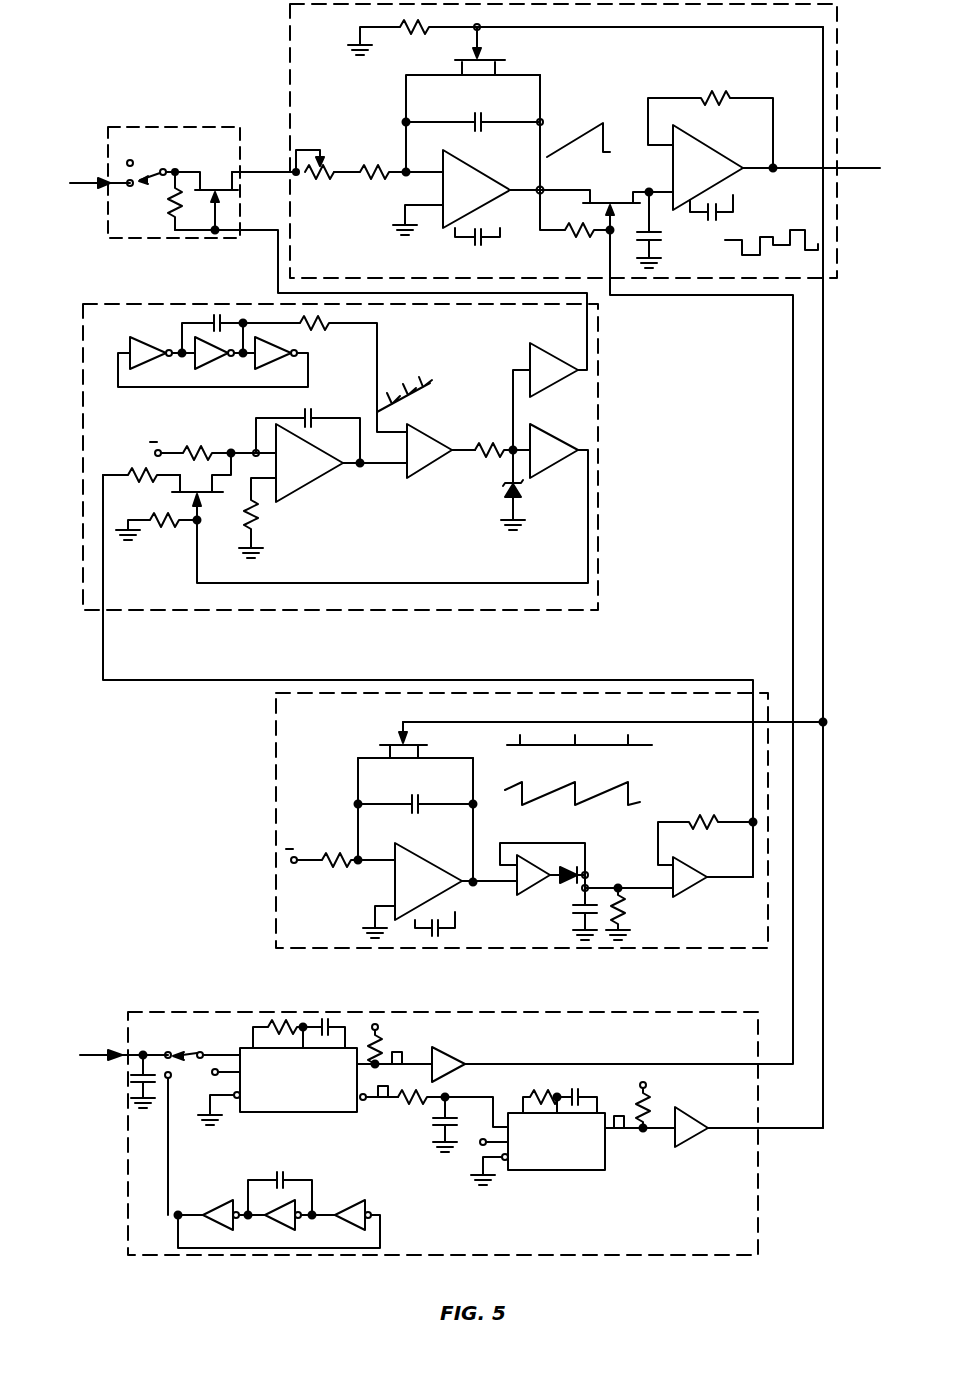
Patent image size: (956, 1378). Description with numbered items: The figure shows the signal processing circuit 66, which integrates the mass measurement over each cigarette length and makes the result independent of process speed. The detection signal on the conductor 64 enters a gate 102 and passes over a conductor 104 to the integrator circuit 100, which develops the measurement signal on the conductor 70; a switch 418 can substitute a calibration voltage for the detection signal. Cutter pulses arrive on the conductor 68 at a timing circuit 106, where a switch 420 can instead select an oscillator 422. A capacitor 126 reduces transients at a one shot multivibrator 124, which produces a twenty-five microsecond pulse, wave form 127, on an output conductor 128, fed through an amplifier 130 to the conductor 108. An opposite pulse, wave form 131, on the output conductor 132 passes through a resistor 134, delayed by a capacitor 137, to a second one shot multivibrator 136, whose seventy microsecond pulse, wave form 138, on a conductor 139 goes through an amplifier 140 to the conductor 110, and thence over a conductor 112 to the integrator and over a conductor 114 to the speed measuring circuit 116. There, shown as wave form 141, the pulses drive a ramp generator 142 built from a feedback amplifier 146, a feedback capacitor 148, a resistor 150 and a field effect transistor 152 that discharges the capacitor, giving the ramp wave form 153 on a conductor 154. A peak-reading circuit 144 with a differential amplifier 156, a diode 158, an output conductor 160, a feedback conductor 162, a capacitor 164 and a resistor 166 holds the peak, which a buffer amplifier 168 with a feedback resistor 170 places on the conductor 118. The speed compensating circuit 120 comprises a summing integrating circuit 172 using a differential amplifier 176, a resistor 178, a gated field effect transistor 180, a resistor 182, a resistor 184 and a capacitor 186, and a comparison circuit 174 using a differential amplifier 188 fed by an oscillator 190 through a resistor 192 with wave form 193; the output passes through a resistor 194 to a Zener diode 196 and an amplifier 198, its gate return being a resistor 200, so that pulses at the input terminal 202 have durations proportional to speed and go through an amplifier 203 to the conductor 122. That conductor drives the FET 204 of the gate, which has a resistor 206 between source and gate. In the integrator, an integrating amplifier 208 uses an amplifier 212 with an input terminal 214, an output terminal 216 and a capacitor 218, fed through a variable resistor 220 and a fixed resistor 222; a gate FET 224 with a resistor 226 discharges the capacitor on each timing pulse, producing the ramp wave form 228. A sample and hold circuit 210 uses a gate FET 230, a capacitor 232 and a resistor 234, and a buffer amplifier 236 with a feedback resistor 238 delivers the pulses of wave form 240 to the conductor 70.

The conductor 64 is at (82, 183).
The signal processing circuit 66 is at (130, 85).
The conductor 68 is at (90, 1058).
The conductor 70 is at (858, 168).
The integrator circuit 100 is at (290, 12).
The gate 102 is at (152, 127).
The conductor 104 is at (263, 170).
The timing circuit 106 is at (180, 1012).
The conductor 108 is at (766, 1068).
The conductor 110 is at (768, 1130).
The conductor 112 is at (828, 392).
The conductor 114 is at (780, 720).
The speed measuring circuit 116 is at (275, 755).
The conductor 118 is at (207, 678).
The speed compensating circuit 120 is at (598, 497).
The conductor 122 is at (258, 245).
The one shot multivibrator 124 is at (318, 1112).
The capacitor 126 is at (130, 1088).
The wave form 127 is at (400, 1052).
The output conductor 128 is at (390, 1068).
The amplifier 130 is at (458, 1054).
The wave form 131 is at (384, 1100).
The output conductor 132 is at (370, 1100).
The resistor 134 is at (412, 1102).
The second one shot multivibrator 136 is at (545, 1170).
The capacitor 137 is at (437, 1125).
The wave form 138 is at (616, 1114).
The conductor 139 is at (655, 1125).
The amplifier 140 is at (688, 1140).
The wave form 141 is at (612, 746).
The ramp generator 142 is at (305, 772).
The peak-reading circuit 144 is at (666, 798).
The feedback amplifier 146 is at (428, 862).
The feedback capacitor 148 is at (422, 802).
The resistor 150 is at (333, 870).
The field effect transistor 152 is at (400, 738).
The wave form 153 is at (575, 782).
The conductor 154 is at (488, 890).
The differential amplifier 156 is at (528, 890).
The diode 158 is at (572, 865).
The output conductor 160 is at (590, 886).
The conductor 162 is at (540, 843).
The capacitor 164 is at (578, 912).
The resistor 166 is at (626, 915).
The buffer amplifier 168 is at (690, 870).
The feedback resistor 170 is at (695, 818).
The summing integrating circuit 172 is at (330, 512).
The comparison circuit 174 is at (418, 512).
The differential amplifier 176 is at (322, 478).
The resistor 178 is at (138, 468).
The gated field effect transistor 180 is at (205, 505).
The resistor 182 is at (196, 447).
The resistor 184 is at (262, 525).
The capacitor 186 is at (316, 412).
The differential amplifier 188 is at (428, 438).
The oscillator 190 is at (160, 338).
The resistor 192 is at (318, 328).
The wave form 193 is at (422, 382).
The resistor 194 is at (490, 440).
The Zener diode 196 is at (508, 490).
The amplifier 198 is at (560, 442).
The resistor 200 is at (158, 530).
The input terminal 202 is at (508, 455).
The amplifier 203 is at (553, 358).
The FET 204 is at (208, 186).
The resistor 206 is at (172, 200).
The integrating amplifier 208 is at (575, 95).
The sample and hold circuit 210 is at (633, 138).
The amplifier 212 is at (478, 182).
The input terminal 214 is at (403, 178).
The output terminal 216 is at (546, 188).
The capacitor 218 is at (479, 120).
The variable resistor 220 is at (326, 165).
The fixed resistor 222 is at (380, 166).
The gate FET 224 is at (492, 56).
The resistor 226 is at (388, 32).
The ramp wave form 228 is at (576, 135).
The gate FET 230 is at (620, 188).
The capacitor 232 is at (660, 245).
The resistor 234 is at (565, 238).
The buffer amplifier 236 is at (718, 148).
The feedback resistor 238 is at (708, 92).
The wave form 240 is at (758, 235).
The switch 418 is at (150, 178).
The switch 420 is at (197, 1053).
The oscillator 422 is at (226, 1185).